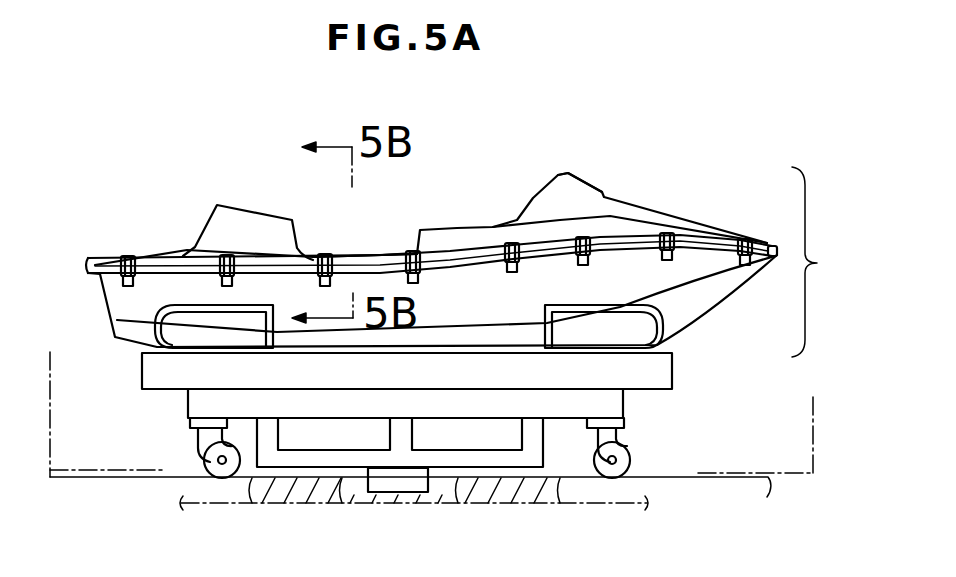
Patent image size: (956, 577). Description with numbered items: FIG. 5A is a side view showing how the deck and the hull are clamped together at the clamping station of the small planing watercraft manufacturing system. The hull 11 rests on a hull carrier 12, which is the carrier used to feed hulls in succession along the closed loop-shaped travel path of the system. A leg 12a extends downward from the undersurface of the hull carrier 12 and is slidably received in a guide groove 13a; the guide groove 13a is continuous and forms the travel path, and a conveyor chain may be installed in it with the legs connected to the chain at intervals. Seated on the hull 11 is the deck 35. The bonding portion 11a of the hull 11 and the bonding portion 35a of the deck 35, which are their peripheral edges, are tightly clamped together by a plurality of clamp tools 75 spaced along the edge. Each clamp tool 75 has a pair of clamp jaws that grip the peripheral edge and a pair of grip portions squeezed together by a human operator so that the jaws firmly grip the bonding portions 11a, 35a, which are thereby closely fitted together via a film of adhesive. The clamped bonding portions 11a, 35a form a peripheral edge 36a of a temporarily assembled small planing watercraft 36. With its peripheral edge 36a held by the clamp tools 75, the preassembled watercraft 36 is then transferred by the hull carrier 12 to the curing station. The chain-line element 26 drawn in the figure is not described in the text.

The hull 11 is at (440, 276).
The bonding portion of the hull 11a is at (592, 203).
The hull carrier 12 is at (407, 449).
The leg 12a is at (400, 513).
The guide groove 13a is at (343, 487).
The container wall 26 is at (50, 427).
The deck 35 is at (442, 224).
The bonding portion of the deck 35a is at (403, 187).
The temporarily assembled small planing watercraft 36 is at (824, 262).
The peripheral edge of the watercraft 36a is at (529, 139).
The clamp tools 75 is at (436, 192).